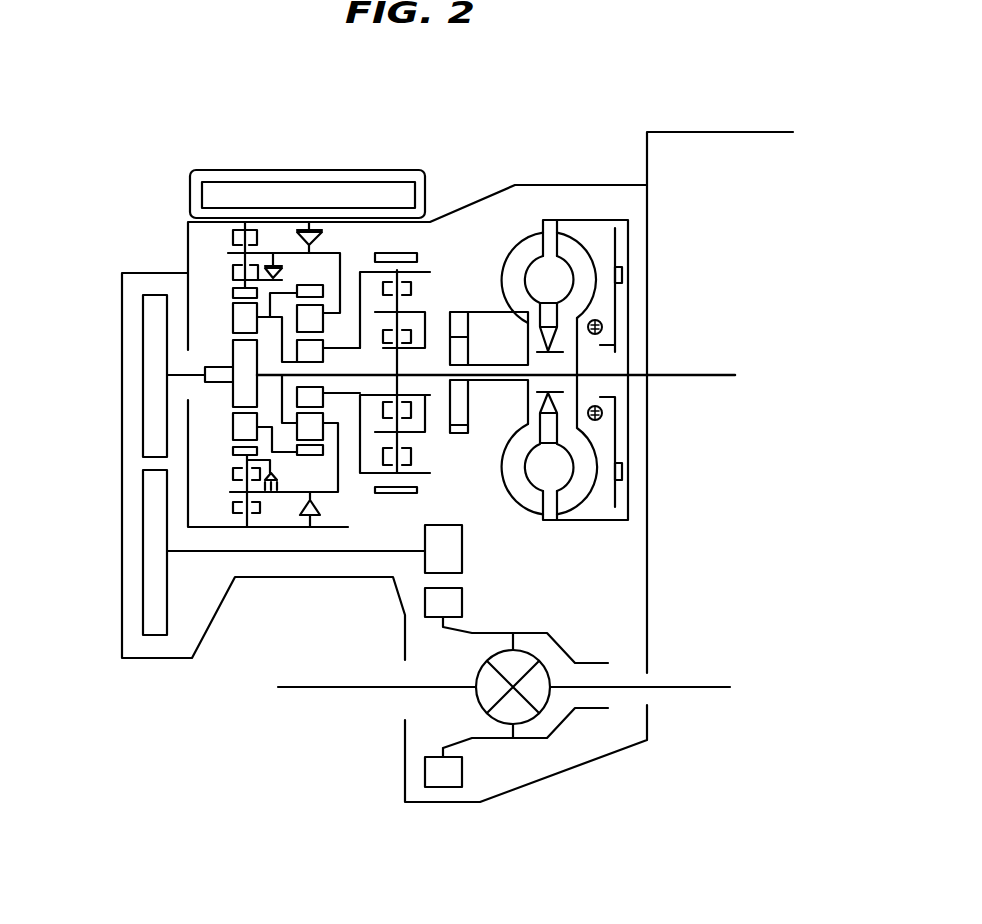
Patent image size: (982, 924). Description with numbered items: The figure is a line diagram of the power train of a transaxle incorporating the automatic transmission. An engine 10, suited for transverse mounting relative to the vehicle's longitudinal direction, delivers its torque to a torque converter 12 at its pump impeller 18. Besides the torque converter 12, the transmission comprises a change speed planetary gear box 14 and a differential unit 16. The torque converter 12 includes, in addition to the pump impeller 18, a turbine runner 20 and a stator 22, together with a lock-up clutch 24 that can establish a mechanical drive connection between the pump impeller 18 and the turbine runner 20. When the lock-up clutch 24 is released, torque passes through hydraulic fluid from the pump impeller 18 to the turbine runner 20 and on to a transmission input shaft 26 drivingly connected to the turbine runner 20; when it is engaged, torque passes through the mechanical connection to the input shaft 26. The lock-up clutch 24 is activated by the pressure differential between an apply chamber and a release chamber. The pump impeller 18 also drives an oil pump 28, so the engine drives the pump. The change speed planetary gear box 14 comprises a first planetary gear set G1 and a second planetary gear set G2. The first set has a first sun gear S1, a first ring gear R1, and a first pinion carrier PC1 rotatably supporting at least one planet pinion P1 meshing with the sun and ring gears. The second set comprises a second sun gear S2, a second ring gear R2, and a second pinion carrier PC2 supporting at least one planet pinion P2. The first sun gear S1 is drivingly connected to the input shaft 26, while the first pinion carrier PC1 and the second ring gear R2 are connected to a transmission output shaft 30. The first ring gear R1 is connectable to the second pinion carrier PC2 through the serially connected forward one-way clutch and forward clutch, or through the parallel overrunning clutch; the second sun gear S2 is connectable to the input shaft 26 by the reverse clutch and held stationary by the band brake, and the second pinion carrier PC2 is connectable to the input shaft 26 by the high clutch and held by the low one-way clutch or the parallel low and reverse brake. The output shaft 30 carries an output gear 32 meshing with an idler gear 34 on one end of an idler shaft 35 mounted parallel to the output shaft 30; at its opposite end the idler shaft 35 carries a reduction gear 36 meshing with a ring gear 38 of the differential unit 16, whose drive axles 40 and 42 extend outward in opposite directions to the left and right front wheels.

The engine 10 is at (682, 130).
The torque converter 12 is at (562, 208).
The change speed planetary gear box 14 is at (270, 232).
The differential unit 16 is at (534, 640).
The pump impeller 18 is at (528, 252).
The turbine runner 20 is at (570, 250).
The stator 22 is at (547, 313).
The lock-up clutch 24 is at (615, 298).
The transmission input shaft 26 is at (488, 372).
The oil pump 28 is at (460, 435).
The transmission output shaft 30 is at (193, 372).
The output gear 32 is at (147, 396).
The idler gear 34 is at (147, 554).
The idler shaft 35 is at (390, 550).
The reduction gear 36 is at (462, 535).
The ring gear 38 is at (447, 777).
The drive axle 40 is at (368, 690).
The drive axle 42 is at (700, 688).
The first planetary gear set G1 is at (226, 297).
The second planetary gear set G2 is at (304, 270).
The first sun gear S1 is at (233, 392).
The planet pinion P1 is at (233, 423).
The first pinion carrier PC1 is at (236, 453).
The first ring gear R1 is at (235, 458).
The second sun gear S2 is at (322, 397).
The planet pinion P2 is at (318, 430).
The second ring gear R2 is at (322, 455).
The second pinion carrier PC2 is at (277, 423).